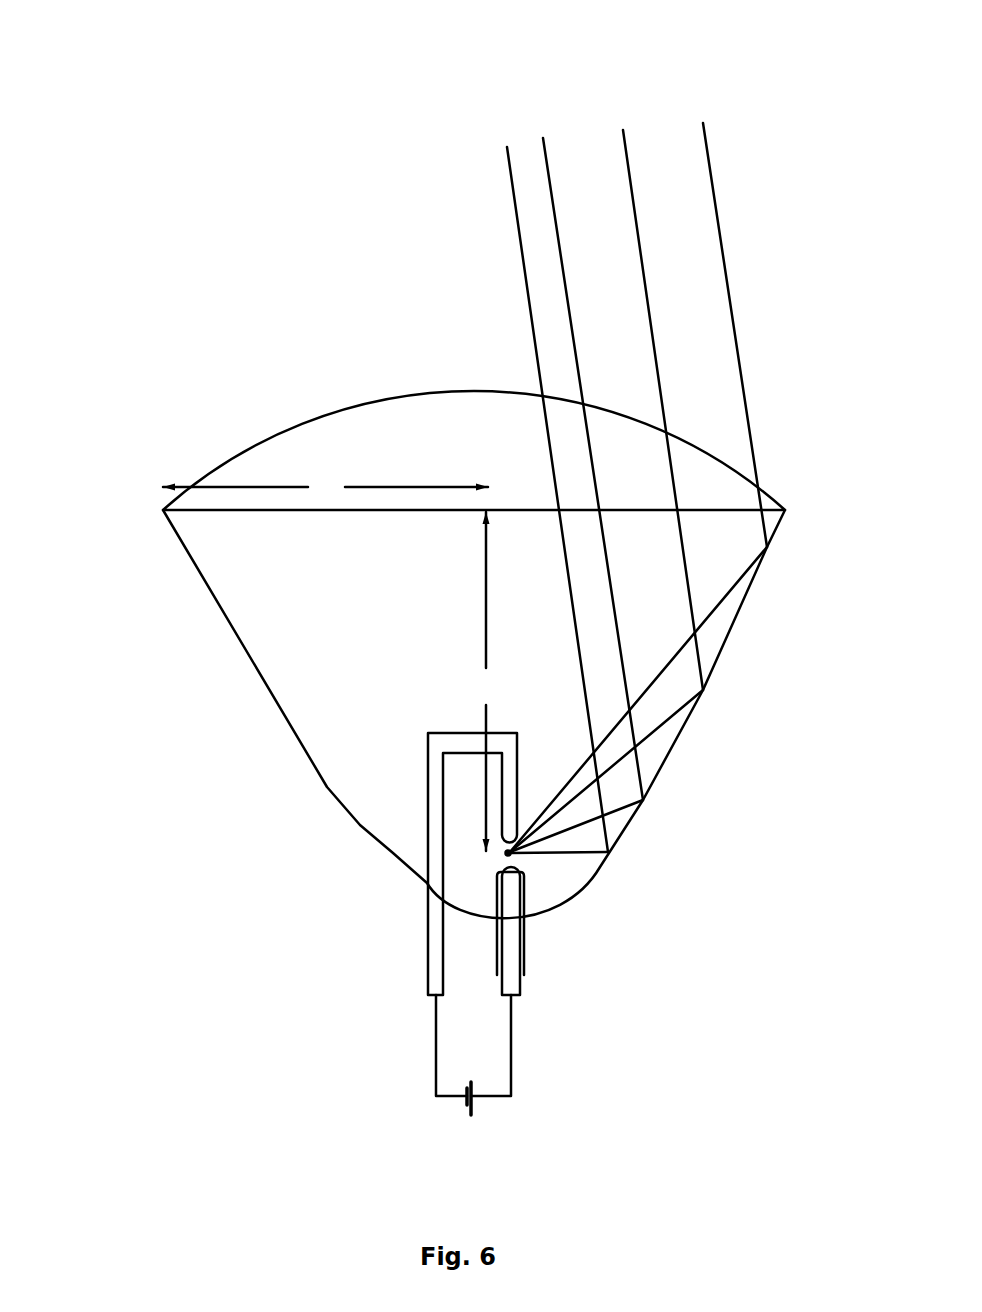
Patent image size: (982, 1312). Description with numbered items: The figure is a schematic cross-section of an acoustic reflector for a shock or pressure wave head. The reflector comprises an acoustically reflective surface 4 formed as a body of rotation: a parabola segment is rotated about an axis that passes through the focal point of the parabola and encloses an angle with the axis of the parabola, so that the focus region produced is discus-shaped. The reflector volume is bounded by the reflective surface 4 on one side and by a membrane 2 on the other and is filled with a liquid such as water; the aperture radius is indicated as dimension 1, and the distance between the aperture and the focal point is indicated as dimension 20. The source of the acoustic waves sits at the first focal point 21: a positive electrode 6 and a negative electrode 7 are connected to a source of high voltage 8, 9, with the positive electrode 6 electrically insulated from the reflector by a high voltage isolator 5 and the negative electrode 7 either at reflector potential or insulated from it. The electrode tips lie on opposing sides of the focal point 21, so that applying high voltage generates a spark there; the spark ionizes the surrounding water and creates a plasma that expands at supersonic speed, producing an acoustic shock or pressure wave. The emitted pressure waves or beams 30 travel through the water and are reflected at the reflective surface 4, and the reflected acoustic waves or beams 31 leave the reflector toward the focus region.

The aperture radius 1 is at (325, 488).
The membrane 2 is at (285, 428).
The acoustically reflective surface 4 is at (252, 658).
The high voltage isolator 5 is at (526, 973).
The positive electrode 6 is at (517, 995).
The negative electrode 7 is at (427, 978).
The source of high voltage 8 is at (480, 1105).
The source of high voltage 9 is at (463, 1100).
The distance between aperture and focal point 20 is at (488, 681).
The first focal point 21 is at (498, 853).
The emitted pressure waves 30 is at (707, 625).
The reflected acoustic waves 31 is at (538, 137).